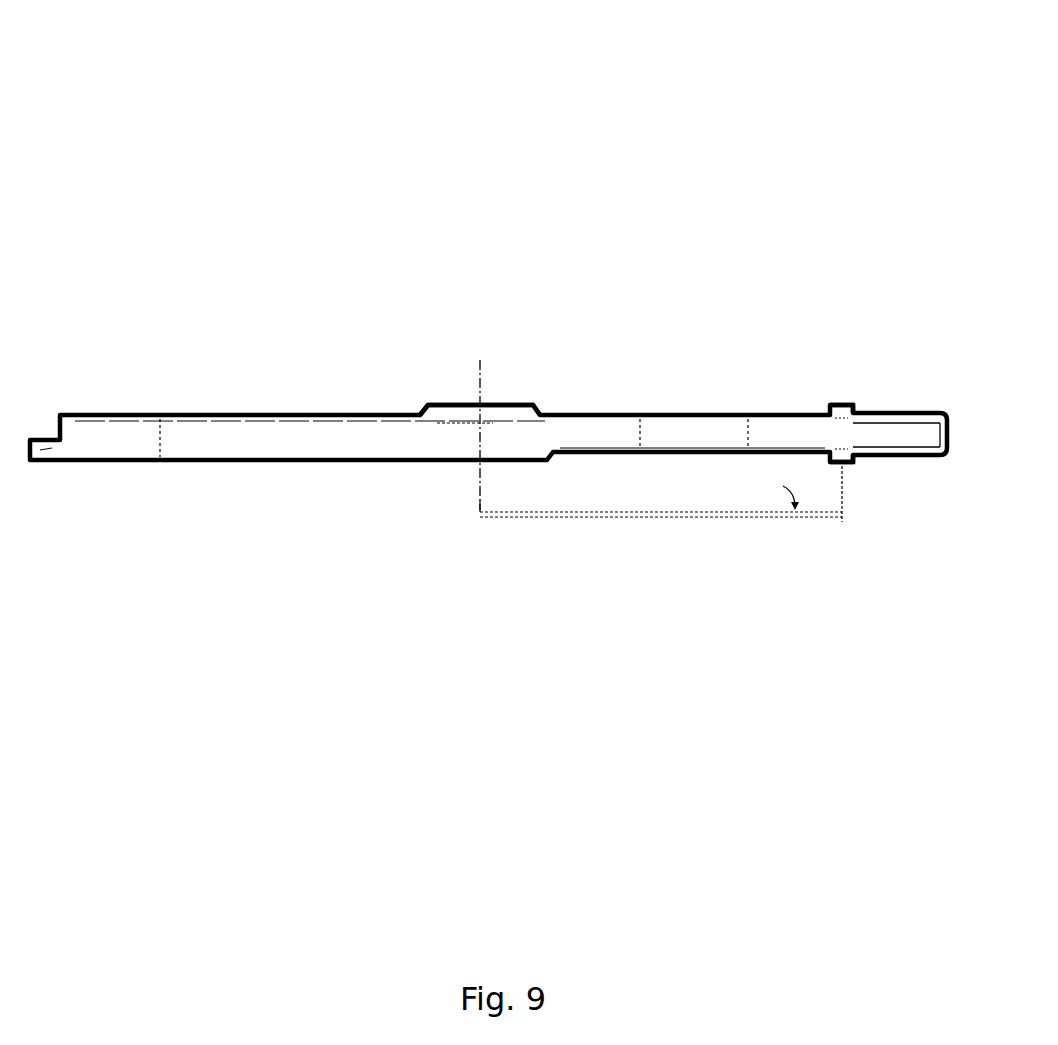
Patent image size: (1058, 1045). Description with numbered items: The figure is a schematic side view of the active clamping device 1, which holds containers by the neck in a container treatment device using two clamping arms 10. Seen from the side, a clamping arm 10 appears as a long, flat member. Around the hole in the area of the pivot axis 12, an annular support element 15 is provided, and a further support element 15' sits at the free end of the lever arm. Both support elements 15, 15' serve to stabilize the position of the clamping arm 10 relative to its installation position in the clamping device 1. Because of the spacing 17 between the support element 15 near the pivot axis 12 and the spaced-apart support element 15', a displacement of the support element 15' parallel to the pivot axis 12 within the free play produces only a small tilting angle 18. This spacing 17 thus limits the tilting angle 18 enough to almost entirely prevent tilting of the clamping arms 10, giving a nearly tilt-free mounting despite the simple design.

The active clamping device 1 is at (168, 68).
The clamping arm 10 is at (305, 443).
The pivot axis 12 is at (478, 498).
The annular support element 15 is at (466, 362).
The further support element 15' is at (866, 386).
The spacing 17 is at (672, 512).
The tilting angle 18 is at (793, 521).